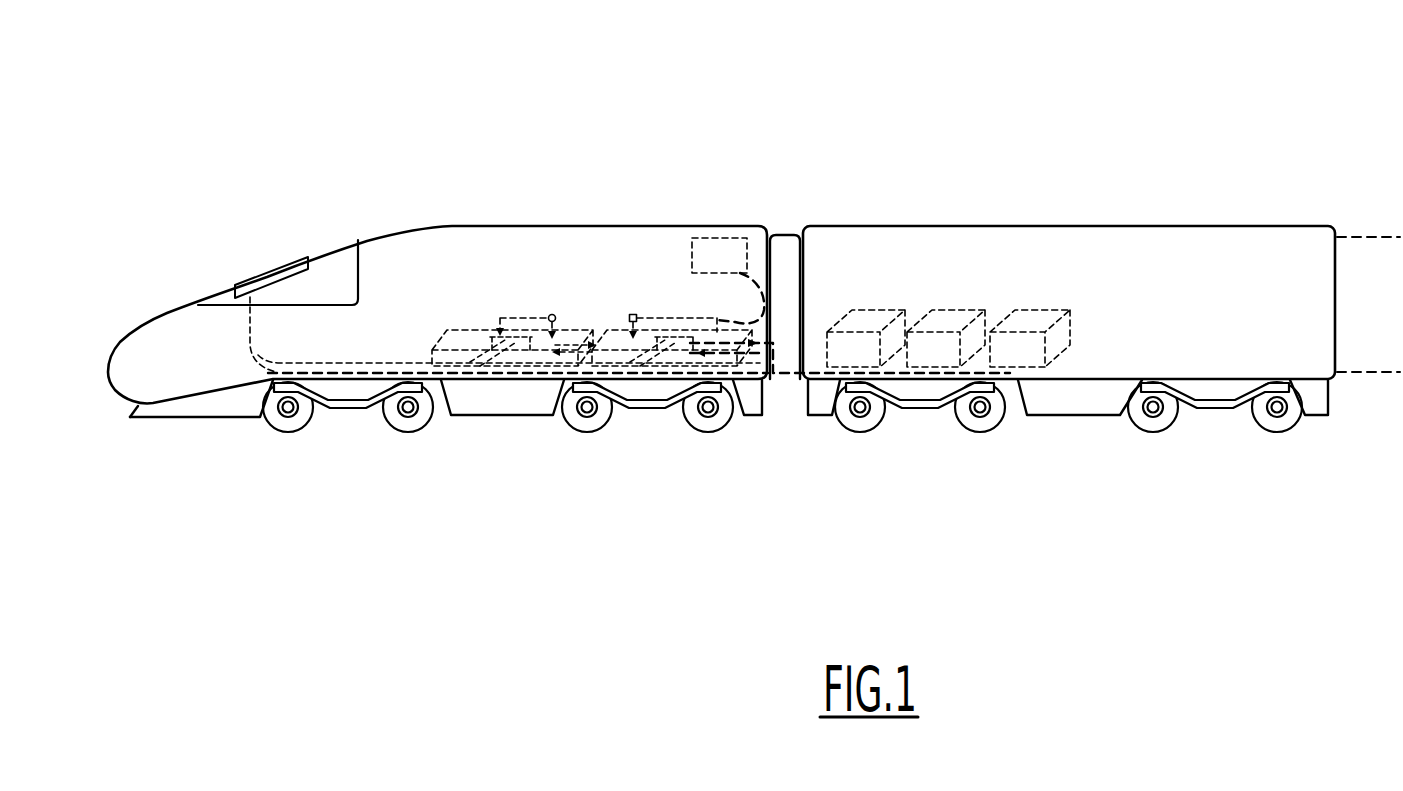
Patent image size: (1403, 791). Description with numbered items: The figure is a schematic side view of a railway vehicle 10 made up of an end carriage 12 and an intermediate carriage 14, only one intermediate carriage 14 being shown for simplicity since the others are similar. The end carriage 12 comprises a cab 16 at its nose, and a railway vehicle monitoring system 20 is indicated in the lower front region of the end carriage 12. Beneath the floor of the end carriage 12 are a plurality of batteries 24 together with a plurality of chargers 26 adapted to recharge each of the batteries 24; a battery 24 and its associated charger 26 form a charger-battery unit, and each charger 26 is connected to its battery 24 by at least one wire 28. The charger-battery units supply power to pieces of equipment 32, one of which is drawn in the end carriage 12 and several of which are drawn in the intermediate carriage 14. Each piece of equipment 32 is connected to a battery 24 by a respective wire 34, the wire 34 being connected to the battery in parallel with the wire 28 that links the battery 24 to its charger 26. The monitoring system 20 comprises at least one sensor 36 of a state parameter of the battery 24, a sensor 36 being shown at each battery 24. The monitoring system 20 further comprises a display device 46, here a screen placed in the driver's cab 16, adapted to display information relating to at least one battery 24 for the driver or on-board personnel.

The railway vehicle 10 is at (437, 251).
The end carriage 12 is at (510, 196).
The intermediate carriage 14 is at (853, 172).
The cab 16 is at (343, 254).
The railway vehicle monitoring system 20 is at (220, 362).
The battery 24 is at (572, 330).
The charger 26 is at (460, 368).
The wire 28 is at (516, 354).
The piece of equipment 32 is at (718, 237).
The wire 34 is at (761, 250).
The sensor 36 is at (552, 313).
The display device 46 is at (283, 270).